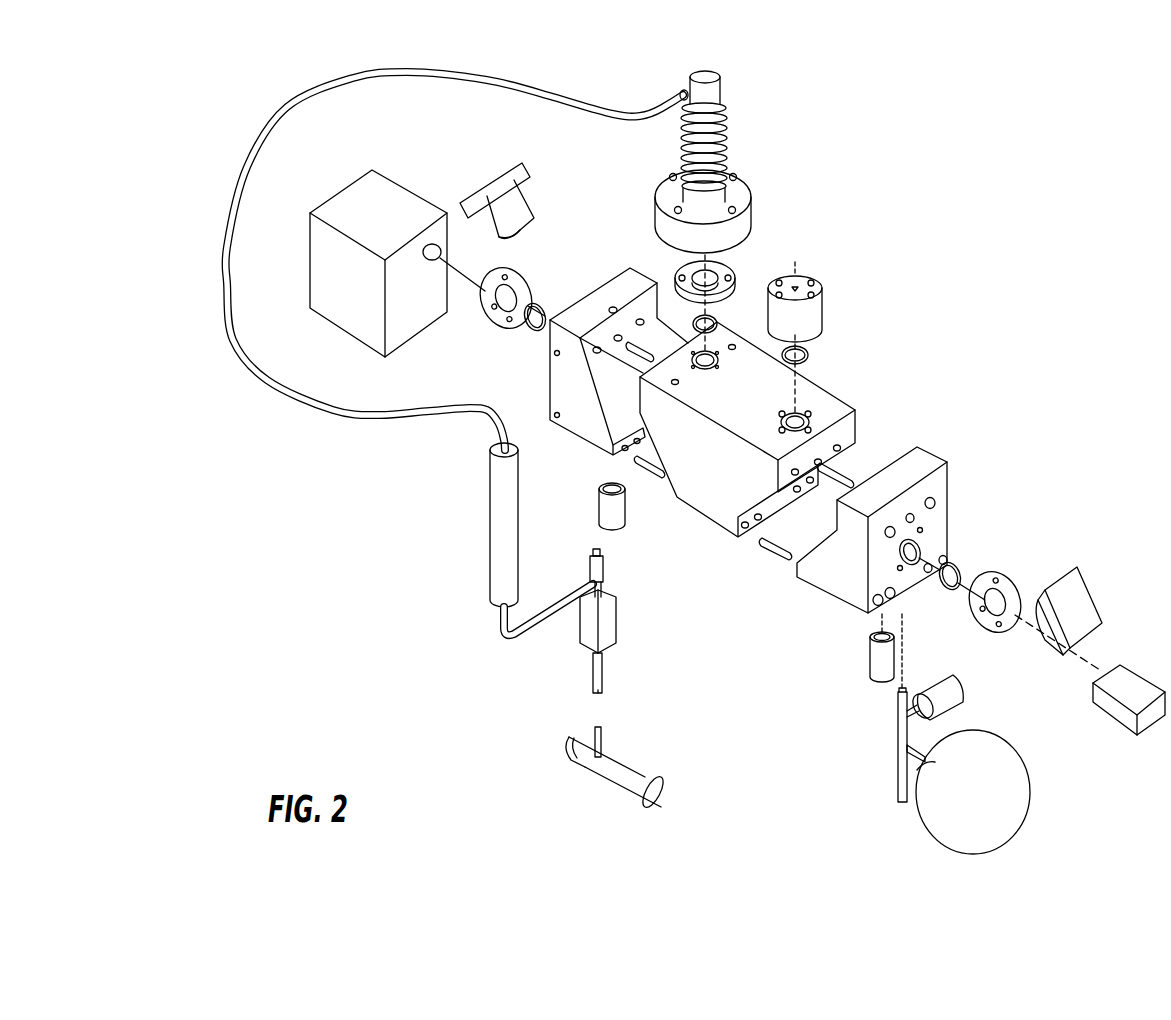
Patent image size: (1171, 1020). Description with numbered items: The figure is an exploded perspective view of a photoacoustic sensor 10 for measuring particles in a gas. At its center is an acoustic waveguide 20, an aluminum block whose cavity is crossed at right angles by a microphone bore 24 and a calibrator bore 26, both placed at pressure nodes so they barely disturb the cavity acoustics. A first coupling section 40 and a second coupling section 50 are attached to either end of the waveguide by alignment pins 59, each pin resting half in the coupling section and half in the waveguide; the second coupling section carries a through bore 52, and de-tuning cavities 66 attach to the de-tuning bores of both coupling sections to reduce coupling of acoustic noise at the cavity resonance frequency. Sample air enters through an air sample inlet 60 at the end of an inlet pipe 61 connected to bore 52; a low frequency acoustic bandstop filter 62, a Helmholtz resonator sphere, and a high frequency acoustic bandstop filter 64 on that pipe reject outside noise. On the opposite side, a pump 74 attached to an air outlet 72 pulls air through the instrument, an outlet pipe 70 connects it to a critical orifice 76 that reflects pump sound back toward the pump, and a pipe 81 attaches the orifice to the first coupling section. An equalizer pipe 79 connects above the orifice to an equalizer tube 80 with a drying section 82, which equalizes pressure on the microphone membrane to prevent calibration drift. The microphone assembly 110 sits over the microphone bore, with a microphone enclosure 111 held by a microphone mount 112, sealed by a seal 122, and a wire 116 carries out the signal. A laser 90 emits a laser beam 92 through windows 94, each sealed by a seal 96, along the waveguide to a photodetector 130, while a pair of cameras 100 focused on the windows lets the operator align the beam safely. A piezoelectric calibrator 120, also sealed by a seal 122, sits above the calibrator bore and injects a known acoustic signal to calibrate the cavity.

The photoacoustic sensor 10 is at (1015, 216).
The acoustic waveguide 20 is at (712, 523).
The microphone bore 24 is at (708, 368).
The calibrator bore 26 is at (809, 423).
The first coupling section 40 is at (549, 381).
The second coupling section 50 is at (931, 449).
The bore 52 is at (921, 545).
The alignment pins 59 is at (641, 473).
The air sample inlet 60 is at (900, 802).
The inlet pipe 61 is at (897, 730).
The low frequency acoustic bandstop filter 62 is at (1031, 793).
The high frequency acoustic bandstop filter 64 is at (962, 680).
The de-tuning cavities 66 is at (630, 520).
The outlet pipe 70 is at (592, 670).
The air outlet 72 is at (600, 694).
The pump 74 is at (612, 789).
The critical orifice 76 is at (617, 628).
The equalizer pipe 79 is at (505, 642).
The equalizer tube 80 is at (568, 98).
The pipe 81 is at (604, 565).
The drying section 82 is at (487, 548).
The laser 90 is at (372, 172).
The laser beam 92 is at (458, 262).
The windows 94 is at (522, 285).
The seal 96 is at (545, 302).
The cameras 100 is at (504, 168).
The microphone assembly 110 is at (742, 146).
The microphone enclosure 111 is at (752, 193).
The microphone mount 112 is at (736, 273).
The wire 116 is at (822, 72).
The piezoelectric calibrator 120 is at (823, 282).
The seal 122 is at (724, 316).
The photodetector 130 is at (1122, 724).